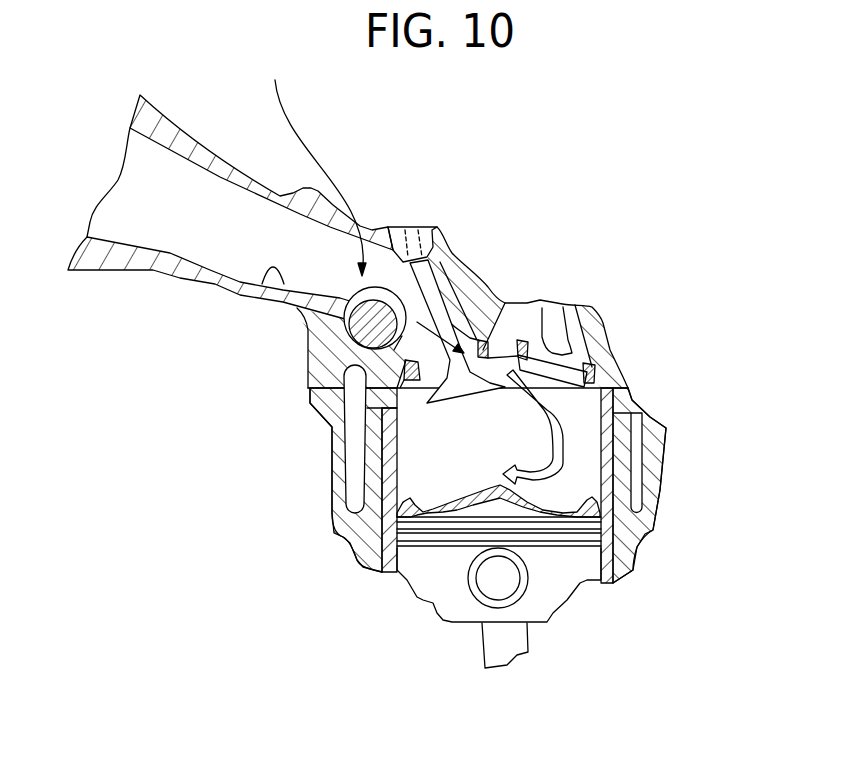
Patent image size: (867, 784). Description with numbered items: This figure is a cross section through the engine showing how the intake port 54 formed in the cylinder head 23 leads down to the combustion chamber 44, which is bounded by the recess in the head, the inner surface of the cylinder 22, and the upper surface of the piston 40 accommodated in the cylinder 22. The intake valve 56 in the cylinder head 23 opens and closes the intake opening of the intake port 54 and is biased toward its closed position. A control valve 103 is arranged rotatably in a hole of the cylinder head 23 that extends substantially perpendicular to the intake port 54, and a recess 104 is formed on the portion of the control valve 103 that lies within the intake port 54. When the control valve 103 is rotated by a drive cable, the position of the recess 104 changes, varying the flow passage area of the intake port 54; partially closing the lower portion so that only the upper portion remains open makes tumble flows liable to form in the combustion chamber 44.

The cylinder 22 is at (660, 490).
The cylinder head 23 is at (200, 280).
The piston 40 is at (548, 588).
The combustion chamber 44 is at (433, 458).
The intake port 54 is at (258, 293).
The intake valve 56 is at (467, 295).
The control valve 103 is at (309, 157).
The recess 104 is at (312, 316).